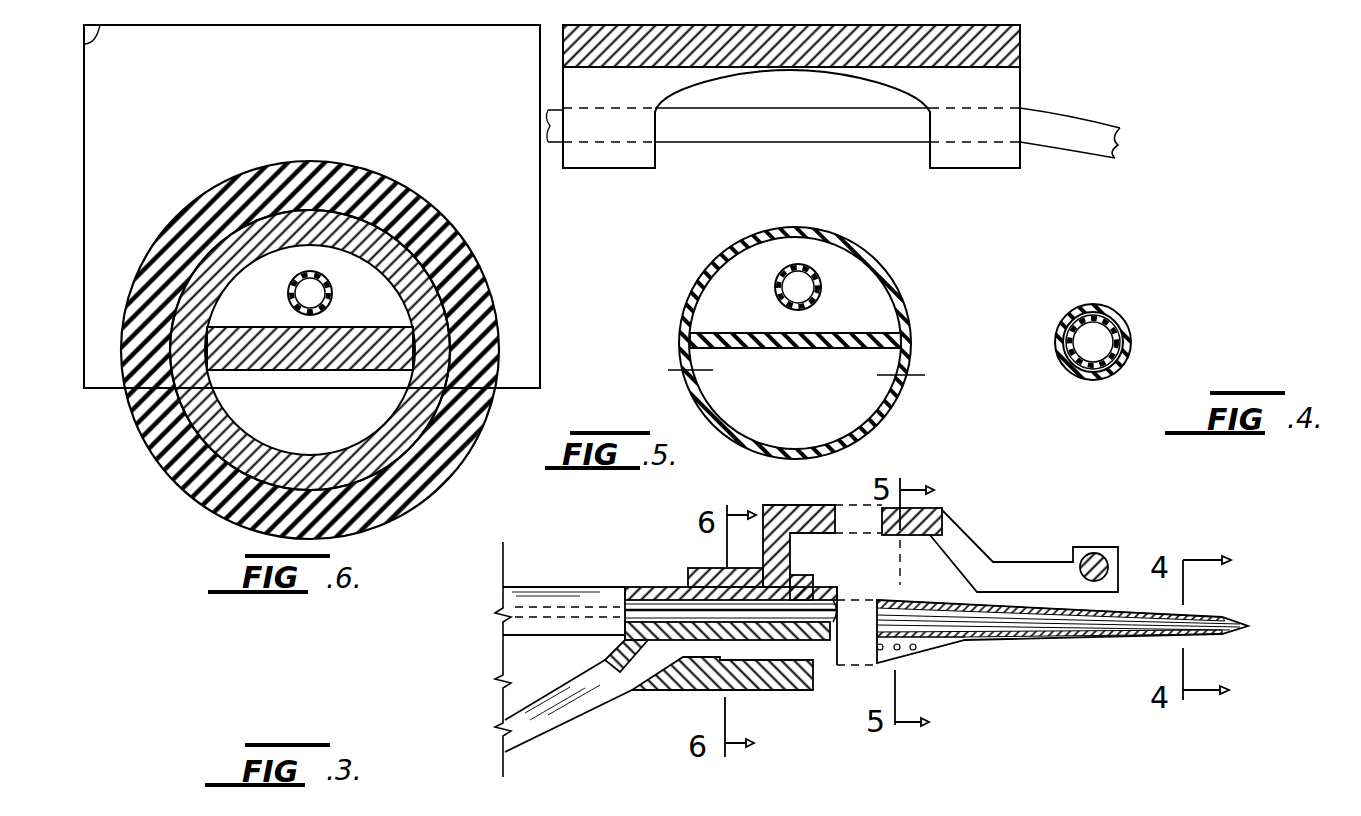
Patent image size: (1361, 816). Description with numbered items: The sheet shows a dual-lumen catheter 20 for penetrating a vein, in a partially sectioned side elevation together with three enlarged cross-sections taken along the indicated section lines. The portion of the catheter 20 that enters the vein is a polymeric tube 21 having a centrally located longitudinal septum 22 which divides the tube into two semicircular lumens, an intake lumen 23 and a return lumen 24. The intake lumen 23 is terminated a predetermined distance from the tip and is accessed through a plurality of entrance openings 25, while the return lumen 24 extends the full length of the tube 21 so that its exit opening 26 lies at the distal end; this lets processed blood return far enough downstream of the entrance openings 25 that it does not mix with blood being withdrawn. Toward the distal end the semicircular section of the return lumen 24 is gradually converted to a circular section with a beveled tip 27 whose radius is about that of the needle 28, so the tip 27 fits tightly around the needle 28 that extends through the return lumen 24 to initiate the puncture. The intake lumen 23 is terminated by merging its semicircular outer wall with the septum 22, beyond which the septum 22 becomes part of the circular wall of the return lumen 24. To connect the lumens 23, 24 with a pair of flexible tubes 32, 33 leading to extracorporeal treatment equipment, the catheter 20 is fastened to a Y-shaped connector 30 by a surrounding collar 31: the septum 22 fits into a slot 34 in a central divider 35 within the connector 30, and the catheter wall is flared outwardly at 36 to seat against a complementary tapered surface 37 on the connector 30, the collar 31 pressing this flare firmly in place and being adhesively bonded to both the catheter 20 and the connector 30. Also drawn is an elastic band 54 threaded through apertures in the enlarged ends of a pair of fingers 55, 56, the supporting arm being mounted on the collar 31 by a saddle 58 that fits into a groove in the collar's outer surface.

In FIG. 3, the dual-lumen catheter 20 is at (1074, 647).
In FIG. 5, the polymeric tube 21 is at (876, 262).
In FIG. 4, the polymeric tube 21 is at (1095, 380).
In FIG. 5, the longitudinal septum 22 is at (797, 349).
In FIG. 5, the intake lumen 23 is at (788, 401).
In FIG. 3, the intake lumen 23 is at (945, 648).
In FIG. 5, the return lumen 24 is at (838, 302).
In FIG. 4, the return lumen 24 is at (1125, 360).
In FIG. 3, the return lumen 24 is at (932, 613).
In FIG. 5, the entrance openings 25 is at (690, 370).
In FIG. 3, the entrance openings 25 is at (900, 650).
In FIG. 3, the exit opening 26 is at (1222, 617).
In FIG. 3, the beveled tip 27 is at (1220, 635).
In FIG. 6, the needle 28 is at (288, 293).
In FIG. 5, the needle 28 is at (775, 282).
In FIG. 4, the needle 28 is at (1088, 347).
In FIG. 3, the needle 28 is at (910, 617).
In FIG. 6, the Y-shaped connector 30 is at (242, 473).
In FIG. 3, the Y-shaped connector 30 is at (690, 588).
In FIG. 6, the collar 31 is at (468, 450).
In FIG. 3, the collar 31 is at (758, 690).
In FIG. 3, the flexible tube 32 is at (505, 722).
In FIG. 3, the flexible tube 33 is at (503, 592).
In FIG. 3, the slot 34 is at (840, 618).
In FIG. 6, the central divider 35 is at (410, 345).
In FIG. 3, the central divider 35 is at (708, 640).
In FIG. 3, the flared portion 36 is at (813, 598).
In FIG. 3, the tapered surface 37 is at (765, 660).
In FIG. 5, the elastic band 54 is at (1085, 152).
In FIG. 3, the elastic band 54 is at (1110, 560).
In FIG. 6, the finger 55 is at (84, 44).
In FIG. 5, the finger 55 is at (1022, 32).
In FIG. 3, the finger 55 is at (797, 505).
In FIG. 5, the finger 56 is at (1022, 88).
In FIG. 3, the finger 56 is at (990, 552).
In FIG. 6, the saddle 58 is at (84, 138).
In FIG. 3, the saddle 58 is at (793, 565).